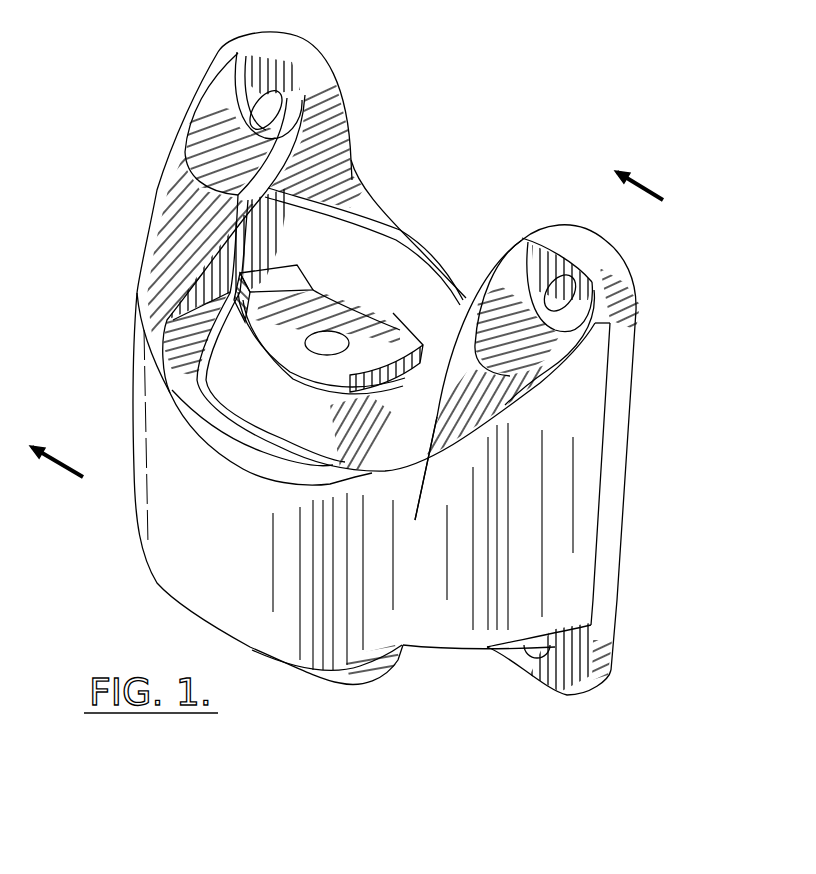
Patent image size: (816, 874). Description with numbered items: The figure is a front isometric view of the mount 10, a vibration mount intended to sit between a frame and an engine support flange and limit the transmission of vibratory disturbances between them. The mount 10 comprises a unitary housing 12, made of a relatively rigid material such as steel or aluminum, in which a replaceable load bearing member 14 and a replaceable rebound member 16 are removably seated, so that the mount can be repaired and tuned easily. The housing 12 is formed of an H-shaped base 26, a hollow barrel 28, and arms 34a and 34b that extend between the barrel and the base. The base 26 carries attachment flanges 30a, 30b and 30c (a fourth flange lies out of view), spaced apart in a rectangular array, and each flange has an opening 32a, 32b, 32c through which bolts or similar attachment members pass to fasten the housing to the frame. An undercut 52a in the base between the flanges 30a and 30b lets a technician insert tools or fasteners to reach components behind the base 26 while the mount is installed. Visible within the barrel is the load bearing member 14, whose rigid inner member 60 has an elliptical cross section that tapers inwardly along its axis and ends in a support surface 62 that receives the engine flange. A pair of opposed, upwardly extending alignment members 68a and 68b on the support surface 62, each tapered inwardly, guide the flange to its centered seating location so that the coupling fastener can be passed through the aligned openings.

The mount 10 is at (693, 230).
The housing 12 is at (150, 140).
The replaceable load bearing member 14 is at (340, 275).
The replaceable rebound member 16 is at (380, 687).
The H-shaped base 26 is at (610, 475).
The hollow barrel 28 is at (175, 553).
The attachment flange 30a is at (612, 285).
The attachment flange 30b is at (280, 52).
The attachment flange 30c is at (602, 658).
The opening 32a is at (557, 292).
The opening 32b is at (270, 110).
The opening 32c is at (530, 657).
The arm 34a is at (150, 243).
The arm 34b is at (415, 520).
The undercut 52a is at (452, 247).
The rigid inner member 60 is at (356, 328).
The support surface 62 is at (288, 350).
The alignment member 68a is at (272, 266).
The alignment member 68b is at (413, 360).